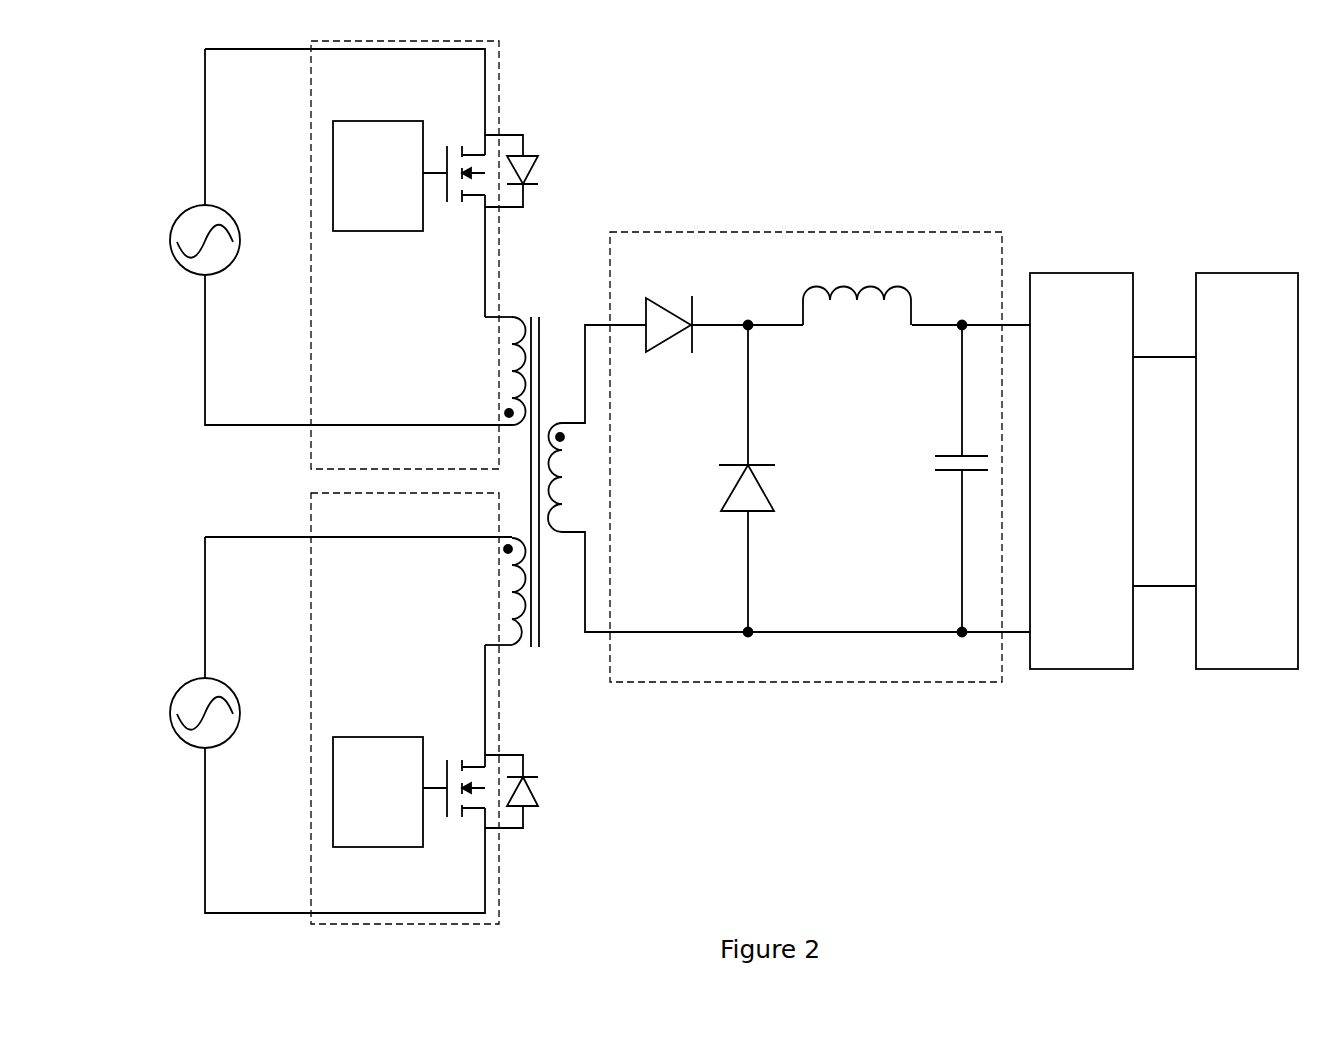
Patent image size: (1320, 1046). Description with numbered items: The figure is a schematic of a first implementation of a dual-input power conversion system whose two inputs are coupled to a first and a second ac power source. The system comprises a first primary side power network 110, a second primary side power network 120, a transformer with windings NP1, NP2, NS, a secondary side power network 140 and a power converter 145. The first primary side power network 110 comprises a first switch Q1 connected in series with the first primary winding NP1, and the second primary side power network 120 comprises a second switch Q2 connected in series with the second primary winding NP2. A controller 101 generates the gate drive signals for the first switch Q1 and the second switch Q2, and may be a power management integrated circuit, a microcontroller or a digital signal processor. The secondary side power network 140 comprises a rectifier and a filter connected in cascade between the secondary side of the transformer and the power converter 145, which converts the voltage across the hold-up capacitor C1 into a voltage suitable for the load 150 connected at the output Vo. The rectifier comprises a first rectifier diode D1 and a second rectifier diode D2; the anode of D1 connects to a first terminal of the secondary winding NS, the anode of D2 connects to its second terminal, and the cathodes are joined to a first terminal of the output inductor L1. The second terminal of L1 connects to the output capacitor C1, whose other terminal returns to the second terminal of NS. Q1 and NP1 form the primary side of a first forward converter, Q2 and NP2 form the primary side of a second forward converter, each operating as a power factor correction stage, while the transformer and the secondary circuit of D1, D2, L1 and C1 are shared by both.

The controller 101 is at (358, 191).
The first primary side power network 110 is at (372, 464).
The second primary side power network 120 is at (374, 522).
The secondary side power network 140 is at (786, 671).
The power converter 145 is at (1061, 486).
The load 150 is at (1227, 486).
The first switch Q1 is at (480, 187).
The second switch Q2 is at (480, 809).
The first primary winding NP1 is at (487, 371).
The second primary winding NP2 is at (487, 591).
The secondary winding NS is at (789, 478).
The first rectifier diode D1 is at (669, 304).
The second rectifier diode D2 is at (768, 478).
The output inductor L1 is at (857, 286).
The output capacitor C1 is at (941, 478).
The output Vo is at (1164, 456).